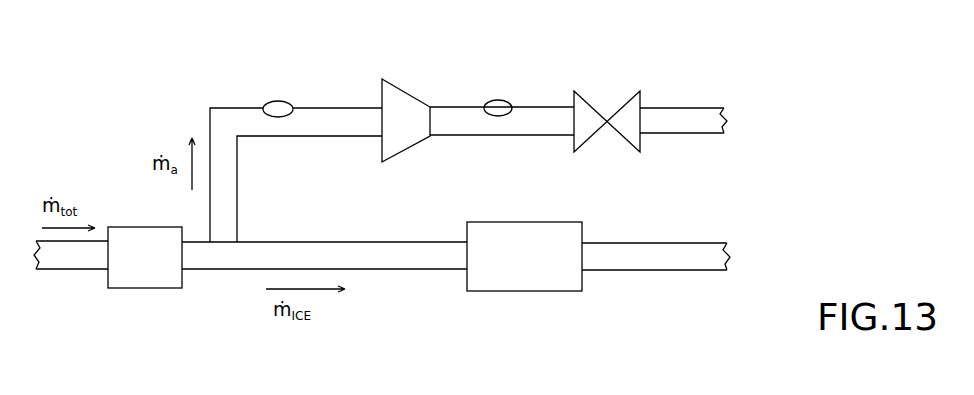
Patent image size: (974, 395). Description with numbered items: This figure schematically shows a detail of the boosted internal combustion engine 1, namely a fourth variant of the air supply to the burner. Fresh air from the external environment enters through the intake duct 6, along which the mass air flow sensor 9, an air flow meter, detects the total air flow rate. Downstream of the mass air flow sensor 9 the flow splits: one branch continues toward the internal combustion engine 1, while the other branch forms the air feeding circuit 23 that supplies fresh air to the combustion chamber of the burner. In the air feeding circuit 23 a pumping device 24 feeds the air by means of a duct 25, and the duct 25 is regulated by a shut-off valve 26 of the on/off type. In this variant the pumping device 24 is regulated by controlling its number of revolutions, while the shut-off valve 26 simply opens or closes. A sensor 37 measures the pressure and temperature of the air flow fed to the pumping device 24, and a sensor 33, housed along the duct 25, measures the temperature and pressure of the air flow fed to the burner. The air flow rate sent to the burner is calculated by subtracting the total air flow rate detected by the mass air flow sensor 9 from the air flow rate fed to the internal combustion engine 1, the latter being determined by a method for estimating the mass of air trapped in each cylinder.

The internal combustion engine 1 is at (524, 256).
The intake duct 6 is at (67, 266).
The mass air flow sensor 9 is at (145, 257).
The air feeding circuit 23 is at (720, 90).
The pumping device 24 is at (403, 103).
The duct 25 is at (476, 136).
The shut-off valve 26 is at (622, 106).
The sensor 33 is at (492, 100).
The sensor 37 is at (279, 101).